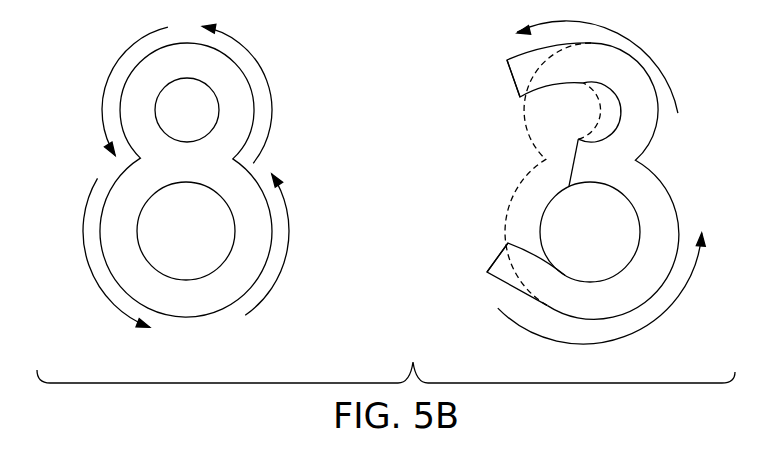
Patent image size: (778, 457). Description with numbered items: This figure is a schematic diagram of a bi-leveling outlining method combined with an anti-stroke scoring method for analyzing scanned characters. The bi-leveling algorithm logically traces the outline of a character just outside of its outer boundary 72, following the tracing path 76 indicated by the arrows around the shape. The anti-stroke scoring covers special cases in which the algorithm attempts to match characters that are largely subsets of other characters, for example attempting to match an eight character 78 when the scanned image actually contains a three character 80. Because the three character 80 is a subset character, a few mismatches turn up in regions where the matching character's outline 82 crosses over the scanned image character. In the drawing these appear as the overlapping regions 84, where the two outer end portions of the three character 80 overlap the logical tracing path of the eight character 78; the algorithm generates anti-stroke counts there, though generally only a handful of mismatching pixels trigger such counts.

The outer boundary 72 is at (220, 50).
The tracing path 76 is at (262, 66).
The "8" character 78 is at (237, 277).
The "3" character 80 is at (653, 227).
The matching character's outline 82 is at (526, 177).
The overlapping regions 84 is at (518, 72).